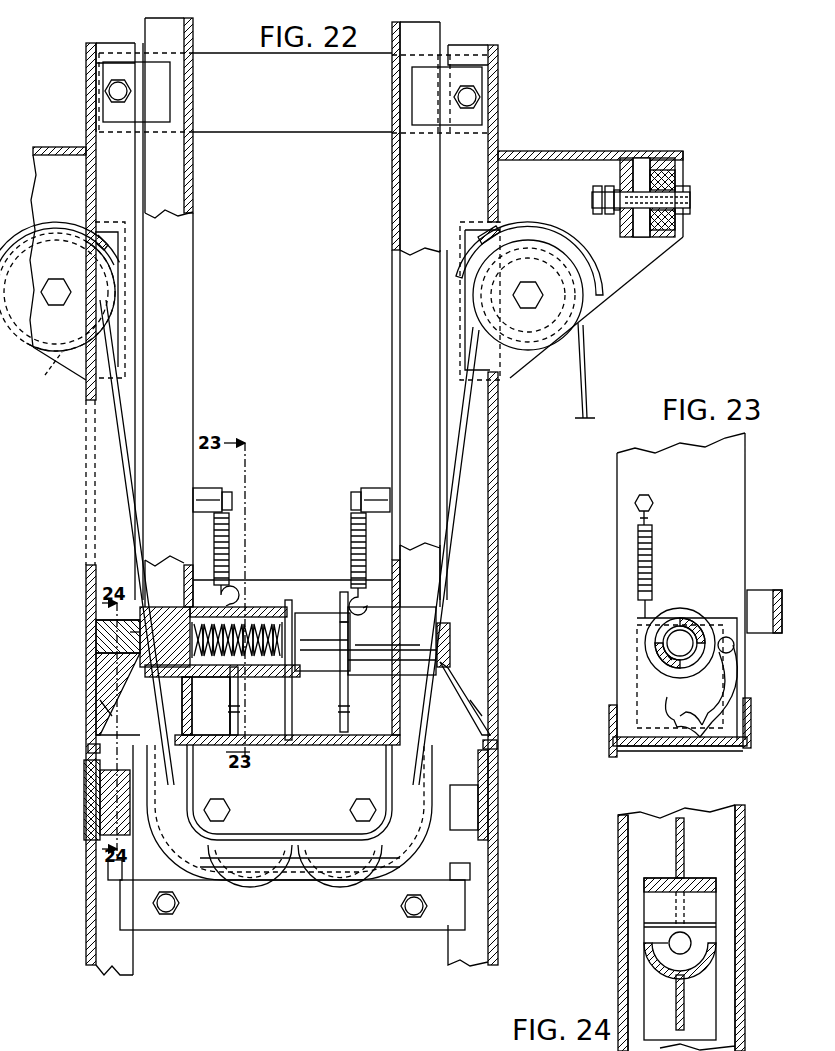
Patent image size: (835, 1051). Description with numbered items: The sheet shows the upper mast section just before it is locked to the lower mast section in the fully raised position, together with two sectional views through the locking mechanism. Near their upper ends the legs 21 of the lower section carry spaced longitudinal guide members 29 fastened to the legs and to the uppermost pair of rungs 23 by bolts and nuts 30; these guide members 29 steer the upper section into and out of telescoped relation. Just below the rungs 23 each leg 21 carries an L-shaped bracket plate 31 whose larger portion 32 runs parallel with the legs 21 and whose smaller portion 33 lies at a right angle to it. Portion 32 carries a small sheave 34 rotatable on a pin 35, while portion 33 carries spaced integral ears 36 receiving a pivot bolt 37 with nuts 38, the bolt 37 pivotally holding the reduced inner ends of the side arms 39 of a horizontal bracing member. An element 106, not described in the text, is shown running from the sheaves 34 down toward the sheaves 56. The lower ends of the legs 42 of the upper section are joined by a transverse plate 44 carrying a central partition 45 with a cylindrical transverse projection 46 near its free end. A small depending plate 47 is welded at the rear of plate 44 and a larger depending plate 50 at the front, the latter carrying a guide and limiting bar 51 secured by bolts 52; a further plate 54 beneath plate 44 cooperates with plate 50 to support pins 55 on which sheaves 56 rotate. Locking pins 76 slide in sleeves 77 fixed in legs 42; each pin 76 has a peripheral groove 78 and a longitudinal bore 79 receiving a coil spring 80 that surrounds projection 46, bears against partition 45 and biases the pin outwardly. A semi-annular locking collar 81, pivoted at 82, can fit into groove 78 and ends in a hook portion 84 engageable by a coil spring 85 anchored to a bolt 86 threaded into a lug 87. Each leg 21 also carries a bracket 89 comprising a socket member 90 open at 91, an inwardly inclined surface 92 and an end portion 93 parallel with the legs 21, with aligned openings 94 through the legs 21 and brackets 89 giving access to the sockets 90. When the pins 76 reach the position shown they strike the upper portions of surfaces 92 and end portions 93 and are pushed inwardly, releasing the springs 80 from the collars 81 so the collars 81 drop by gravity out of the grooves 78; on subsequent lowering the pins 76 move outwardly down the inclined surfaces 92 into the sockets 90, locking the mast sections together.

In FIG. 22, the legs 21 is at (88, 50).
In FIG. 24, the legs 21 is at (740, 812).
In FIG. 22, the rungs 23 is at (264, 120).
In FIG. 23, the rungs 23 is at (768, 592).
In FIG. 22, the longitudinal guide members 29 is at (106, 78).
In FIG. 22, the bolts and nuts 30 is at (114, 91).
In FIG. 22, the bracket arm or plate 31 is at (47, 160).
In FIG. 22, the large portion of bracket plate 32 is at (76, 380).
In FIG. 22, the small portion of bracket plate 33 is at (70, 148).
In FIG. 22, the small sheave 34 is at (62, 362).
In FIG. 22, the pin 35 is at (62, 282).
In FIG. 22, the ears 36 is at (634, 166).
In FIG. 22, the pivot pin or bolt 37 is at (692, 200).
In FIG. 22, the nuts 38 is at (608, 200).
In FIG. 22, the side arms 39 is at (664, 180).
In FIG. 22, the legs 42 is at (186, 246).
In FIG. 22, the transverse plate 44 is at (318, 735).
In FIG. 23, the transverse plate 44 is at (656, 746).
In FIG. 22, the central partition 45 is at (342, 614).
In FIG. 22, the cylindrical transverse projection 46 is at (290, 604).
In FIG. 22, the small depending plate 47 is at (324, 672).
In FIG. 23, the small depending plate 47 is at (611, 726).
In FIG. 22, the large depending plate 50 is at (434, 858).
In FIG. 23, the large depending plate 50 is at (753, 720).
In FIG. 22, the guide and limiting bar 51 is at (344, 928).
In FIG. 22, the bolts 52 is at (178, 906).
In FIG. 22, the plate 54 is at (268, 860).
In FIG. 22, the pins or bolts 55 is at (224, 808).
In FIG. 22, the sheave 56 is at (220, 866).
In FIG. 22, the locking pins 76 is at (442, 625).
In FIG. 23, the locking pins 76 is at (690, 622).
In FIG. 22, the sleeves 77 is at (214, 688).
In FIG. 23, the sleeves 77 is at (688, 603).
In FIG. 22, the peripheral groove 78 is at (239, 612).
In FIG. 23, the peripheral groove 78 is at (637, 638).
In FIG. 22, the longitudinal bore 79 is at (170, 668).
In FIG. 23, the longitudinal bore 79 is at (670, 657).
In FIG. 22, the coil spring 80 is at (268, 665).
In FIG. 23, the coil spring 80 is at (667, 648).
In FIG. 22, the locking collar 81 is at (240, 706).
In FIG. 23, the locking collar 81 is at (742, 692).
In FIG. 23, the pivot 82 is at (734, 645).
In FIG. 23, the hook portion 84 is at (674, 714).
In FIG. 22, the coil spring 85 is at (232, 541).
In FIG. 23, the coil spring 85 is at (655, 547).
In FIG. 22, the bolt 86 is at (234, 500).
In FIG. 23, the bolt 86 is at (654, 503).
In FIG. 22, the lug 87 is at (204, 488).
In FIG. 22, the bracket 89 is at (484, 722).
In FIG. 24, the bracket 89 is at (720, 926).
In FIG. 22, the socket member 90 is at (482, 782).
In FIG. 24, the socket member 90 is at (708, 968).
In FIG. 24, the pin 91 is at (694, 946).
In FIG. 22, the inwardly inclined surface 92 is at (464, 692).
In FIG. 24, the inwardly inclined surface 92 is at (718, 896).
In FIG. 22, the end portion 93 is at (452, 642).
In FIG. 22, the aligned openings 94 is at (500, 746).
In FIG. 24, the aligned openings 94 is at (668, 943).
In FIG. 22, the cable 106 is at (126, 402).